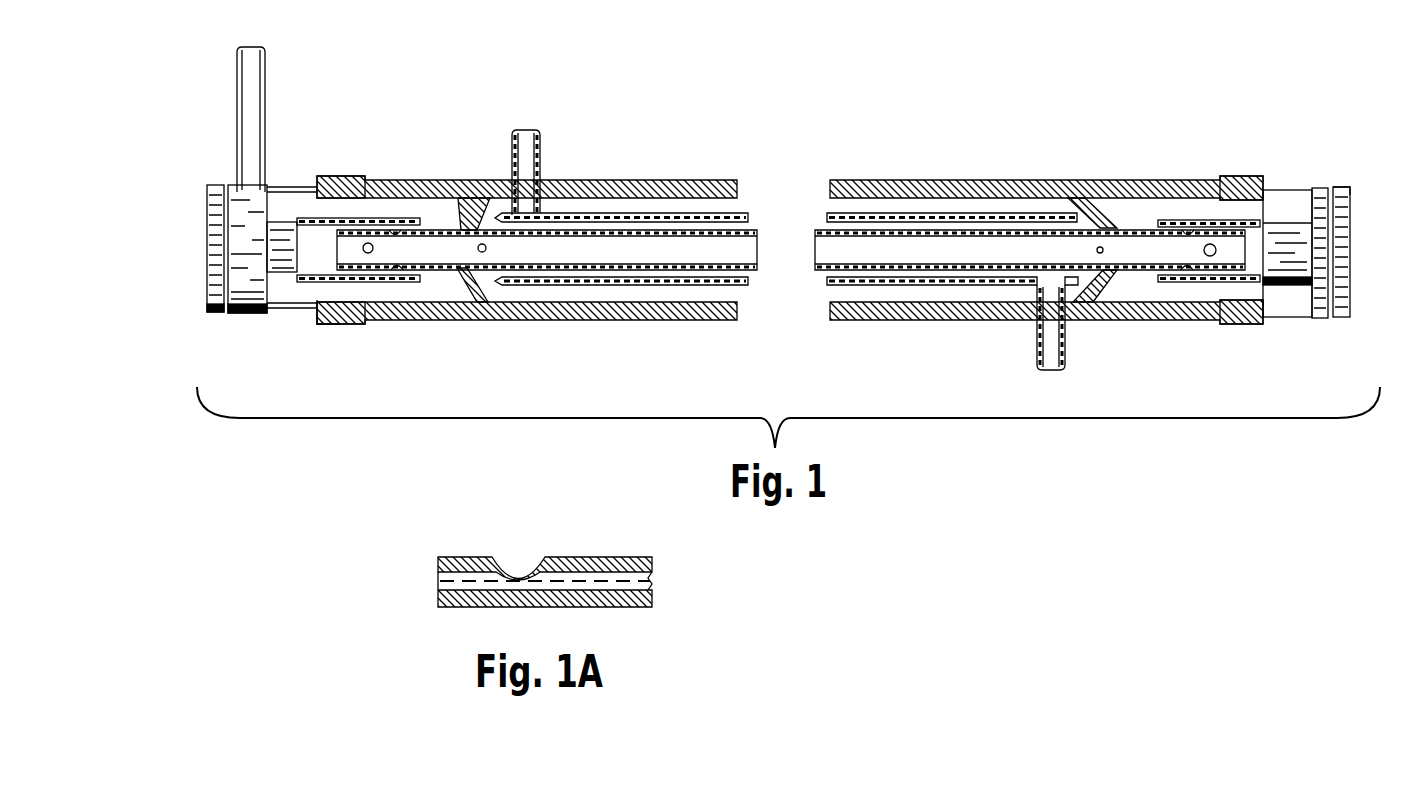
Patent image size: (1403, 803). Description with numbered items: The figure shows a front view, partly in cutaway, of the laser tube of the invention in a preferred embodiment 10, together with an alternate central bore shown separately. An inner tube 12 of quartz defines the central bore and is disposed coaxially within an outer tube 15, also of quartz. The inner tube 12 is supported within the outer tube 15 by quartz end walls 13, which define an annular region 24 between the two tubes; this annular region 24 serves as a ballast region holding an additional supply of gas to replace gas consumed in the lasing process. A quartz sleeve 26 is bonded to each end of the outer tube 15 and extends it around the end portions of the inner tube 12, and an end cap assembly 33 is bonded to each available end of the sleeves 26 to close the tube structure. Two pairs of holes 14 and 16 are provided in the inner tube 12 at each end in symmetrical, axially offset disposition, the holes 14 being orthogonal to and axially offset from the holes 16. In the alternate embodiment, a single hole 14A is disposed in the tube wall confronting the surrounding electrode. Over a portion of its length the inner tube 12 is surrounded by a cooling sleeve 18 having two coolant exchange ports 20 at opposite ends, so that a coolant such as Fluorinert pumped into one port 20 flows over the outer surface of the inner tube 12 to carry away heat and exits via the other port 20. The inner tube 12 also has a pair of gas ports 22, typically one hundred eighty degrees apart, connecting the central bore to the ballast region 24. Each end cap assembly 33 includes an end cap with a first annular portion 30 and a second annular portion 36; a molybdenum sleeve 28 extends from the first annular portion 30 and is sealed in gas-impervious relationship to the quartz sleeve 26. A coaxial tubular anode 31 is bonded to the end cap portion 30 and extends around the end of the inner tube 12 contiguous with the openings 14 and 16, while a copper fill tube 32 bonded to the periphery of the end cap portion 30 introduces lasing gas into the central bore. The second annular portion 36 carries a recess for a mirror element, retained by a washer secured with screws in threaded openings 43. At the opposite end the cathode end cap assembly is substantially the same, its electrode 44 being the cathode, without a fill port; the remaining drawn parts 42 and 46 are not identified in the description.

In FIG. 1, the preferred embodiment 10 is at (668, 106).
In FIG. 1, the inner tube 12 is at (435, 219).
In FIG. 1, the end walls 13 is at (466, 212).
In FIG. 1, the holes 14 is at (369, 243).
In FIG. 1A, the single hole 14A is at (522, 572).
In FIG. 1, the outer tube 15 is at (944, 180).
In FIG. 1, the holes 16 is at (396, 230).
In FIG. 1, the cooling sleeve 18 is at (604, 213).
In FIG. 1, the coolant exchange ports 20 is at (540, 142).
In FIG. 1, the gas ports 22 is at (486, 249).
In FIG. 1, the annular region 24 is at (605, 292).
In FIG. 1, the quartz sleeve 26 is at (450, 322).
In FIG. 1, the sleeve 28 is at (285, 185).
In FIG. 1, the first annular portion 30 is at (257, 314).
In FIG. 1, the tubular anode 31 is at (360, 320).
In FIG. 1, the fill tube 32 is at (268, 92).
In FIG. 1, the end cap assembly 33 is at (218, 280).
In FIG. 1, the second annular portion 36 is at (214, 313).
In FIG. 1, the right fitting 42 is at (1310, 318).
In FIG. 1, the threaded openings 43 is at (1336, 190).
In FIG. 1, the electrode 44 is at (1222, 285).
In FIG. 1, the end ring 46 is at (1340, 318).